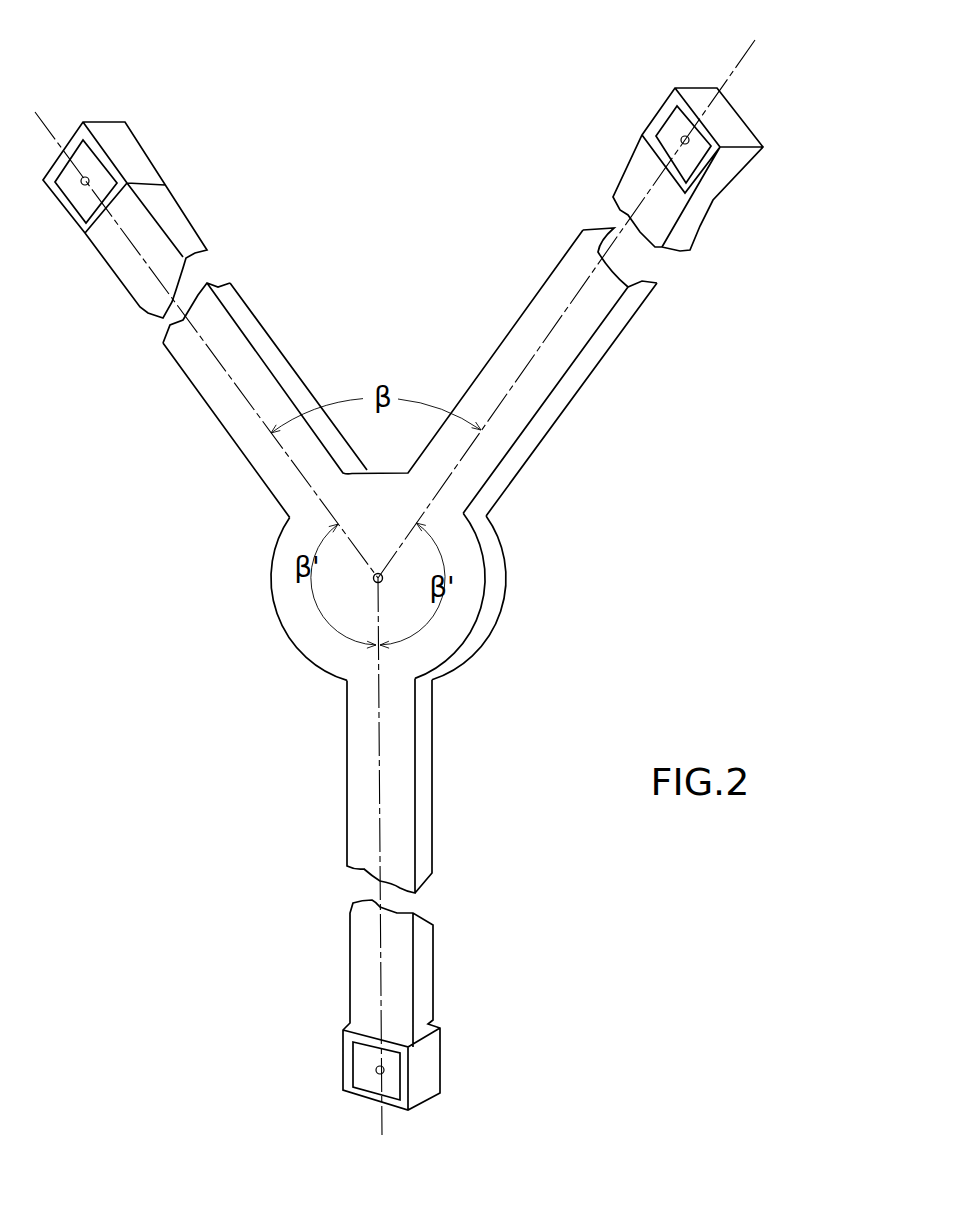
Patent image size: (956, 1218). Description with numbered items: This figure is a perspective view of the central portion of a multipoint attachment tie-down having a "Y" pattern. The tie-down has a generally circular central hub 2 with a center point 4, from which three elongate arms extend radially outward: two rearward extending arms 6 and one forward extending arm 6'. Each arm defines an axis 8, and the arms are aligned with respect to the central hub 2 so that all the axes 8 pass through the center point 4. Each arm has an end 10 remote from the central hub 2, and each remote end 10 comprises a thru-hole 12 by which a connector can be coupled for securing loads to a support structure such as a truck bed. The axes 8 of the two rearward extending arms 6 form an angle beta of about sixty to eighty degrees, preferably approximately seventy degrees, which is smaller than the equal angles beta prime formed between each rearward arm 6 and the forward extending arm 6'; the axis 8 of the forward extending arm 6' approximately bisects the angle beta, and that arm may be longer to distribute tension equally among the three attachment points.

The central hub 2 is at (470, 603).
The center point 4 is at (378, 579).
The elongate arm 6 is at (412, 373).
The forward extending arm 6' is at (434, 785).
The axis 8 is at (52, 122).
The end 10 is at (125, 153).
The thru-hole 12 is at (85, 185).